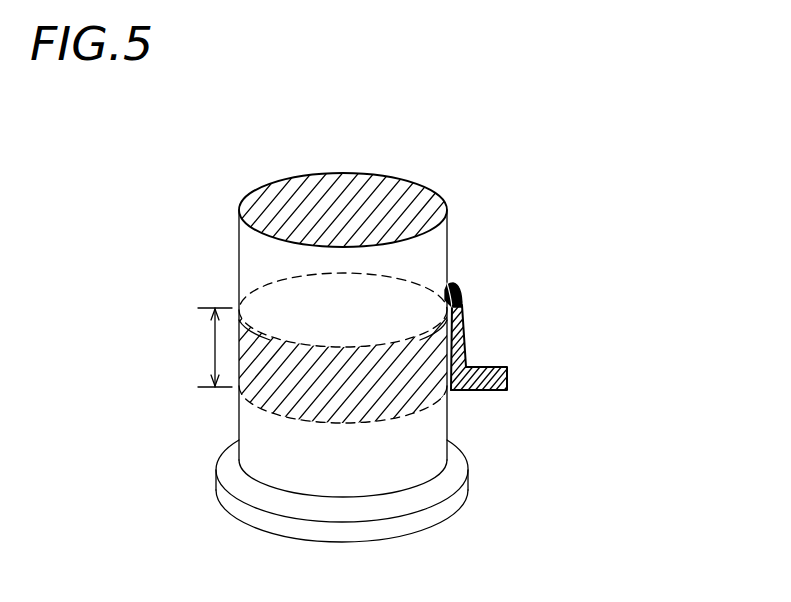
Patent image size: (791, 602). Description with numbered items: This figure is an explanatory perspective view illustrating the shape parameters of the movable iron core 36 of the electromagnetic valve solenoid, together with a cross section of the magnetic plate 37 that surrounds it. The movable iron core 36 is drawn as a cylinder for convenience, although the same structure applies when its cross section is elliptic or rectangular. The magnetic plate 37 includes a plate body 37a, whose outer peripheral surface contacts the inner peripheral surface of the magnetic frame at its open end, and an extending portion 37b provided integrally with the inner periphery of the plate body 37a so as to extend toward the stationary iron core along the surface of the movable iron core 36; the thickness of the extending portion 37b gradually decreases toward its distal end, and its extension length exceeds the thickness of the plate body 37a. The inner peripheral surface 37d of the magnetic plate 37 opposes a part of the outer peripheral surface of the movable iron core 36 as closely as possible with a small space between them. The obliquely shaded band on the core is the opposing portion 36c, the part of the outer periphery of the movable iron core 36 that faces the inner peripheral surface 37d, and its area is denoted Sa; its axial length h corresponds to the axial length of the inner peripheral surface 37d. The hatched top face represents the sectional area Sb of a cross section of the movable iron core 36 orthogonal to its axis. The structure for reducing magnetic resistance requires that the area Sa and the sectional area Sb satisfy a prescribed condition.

The movable iron core 36 is at (289, 459).
The opposing portion 36c is at (282, 377).
The area of the opposing portion Sa is at (281, 367).
The sectional area of the movable iron core Sb is at (357, 202).
The axial length of the inner peripheral surface h is at (209, 347).
The magnetic plate 37 is at (493, 342).
The plate body 37a is at (487, 391).
The extending portion 37b is at (463, 332).
The inner peripheral surface 37d is at (452, 282).